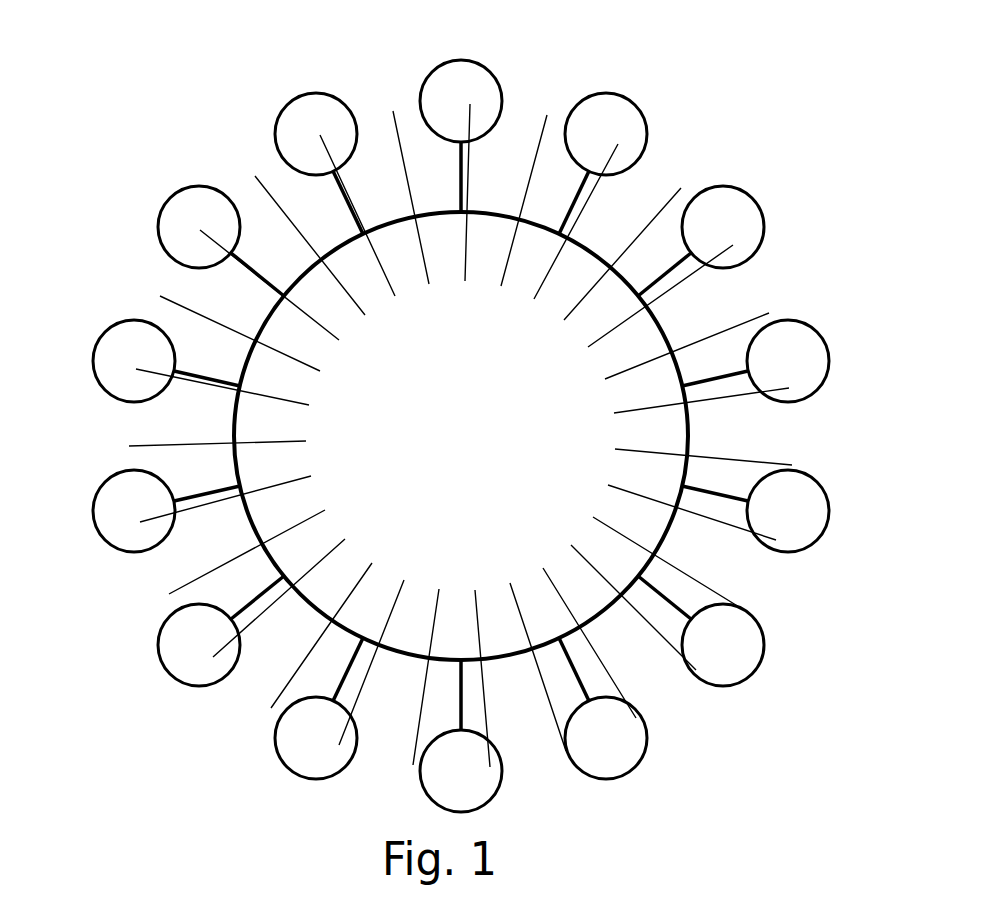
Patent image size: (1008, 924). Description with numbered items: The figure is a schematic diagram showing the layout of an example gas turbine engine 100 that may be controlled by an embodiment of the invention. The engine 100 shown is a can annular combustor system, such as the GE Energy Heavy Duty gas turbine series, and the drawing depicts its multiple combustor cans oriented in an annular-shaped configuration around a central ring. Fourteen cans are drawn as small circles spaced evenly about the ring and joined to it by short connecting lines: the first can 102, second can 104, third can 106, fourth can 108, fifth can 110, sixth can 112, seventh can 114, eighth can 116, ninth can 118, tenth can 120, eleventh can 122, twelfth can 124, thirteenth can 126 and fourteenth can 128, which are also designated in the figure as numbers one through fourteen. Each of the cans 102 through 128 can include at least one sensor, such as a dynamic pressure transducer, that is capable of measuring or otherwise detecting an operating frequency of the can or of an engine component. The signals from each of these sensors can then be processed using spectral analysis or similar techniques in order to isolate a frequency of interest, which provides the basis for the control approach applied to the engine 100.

The gas turbine engine 100 is at (740, 147).
The can 102 is at (319, 143).
The can 104 is at (218, 216).
The can 106 is at (144, 347).
The can 108 is at (137, 509).
The can 110 is at (191, 631).
The can 112 is at (299, 718).
The can 114 is at (479, 749).
The can 116 is at (623, 716).
The can 118 is at (725, 631).
The can 120 is at (782, 511).
The can 122 is at (781, 361).
The can 124 is at (723, 237).
The can 126 is at (625, 153).
The can 128 is at (468, 114).